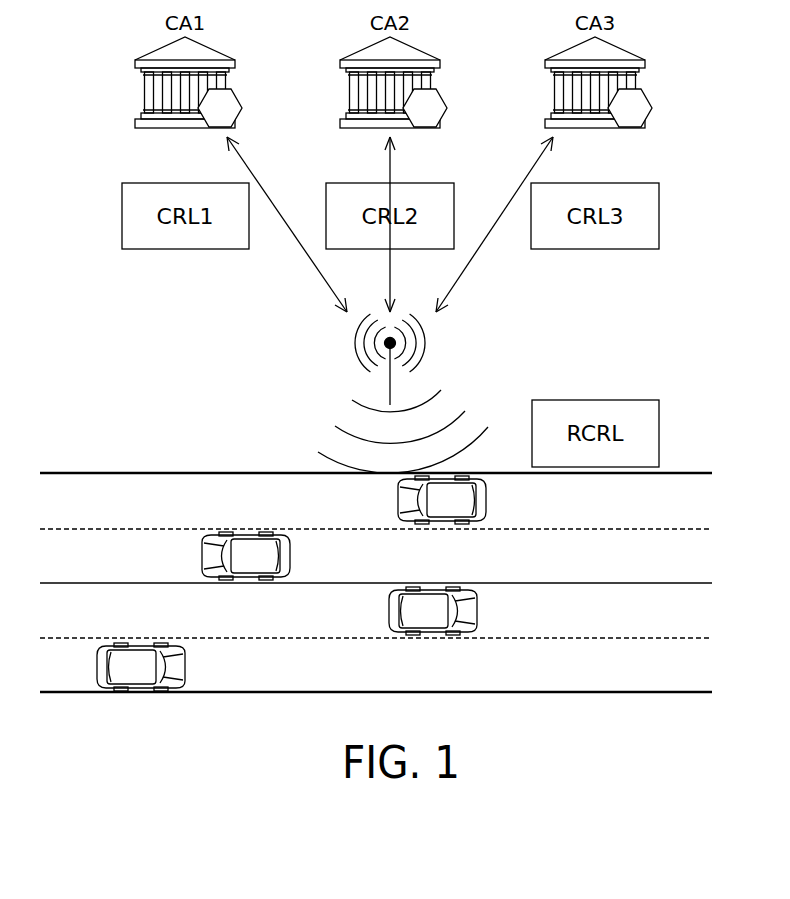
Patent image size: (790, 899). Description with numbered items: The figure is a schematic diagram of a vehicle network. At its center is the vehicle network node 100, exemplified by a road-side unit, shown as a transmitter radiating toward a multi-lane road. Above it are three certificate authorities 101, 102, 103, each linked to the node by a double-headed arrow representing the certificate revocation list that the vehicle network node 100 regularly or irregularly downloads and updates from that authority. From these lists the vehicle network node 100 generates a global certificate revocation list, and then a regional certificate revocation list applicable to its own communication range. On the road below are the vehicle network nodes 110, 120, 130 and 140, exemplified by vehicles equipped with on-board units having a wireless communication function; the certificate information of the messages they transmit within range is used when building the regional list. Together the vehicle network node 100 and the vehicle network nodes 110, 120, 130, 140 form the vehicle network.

The vehicle network node 100 is at (427, 343).
The certificate authority CA1 101 is at (236, 63).
The certificate authority CA2 102 is at (441, 63).
The certificate authority CA3 103 is at (646, 63).
The vehicle network node 110 is at (388, 609).
The vehicle network node 120 is at (488, 500).
The vehicle network node 130 is at (291, 552).
The vehicle network node 140 is at (97, 665).